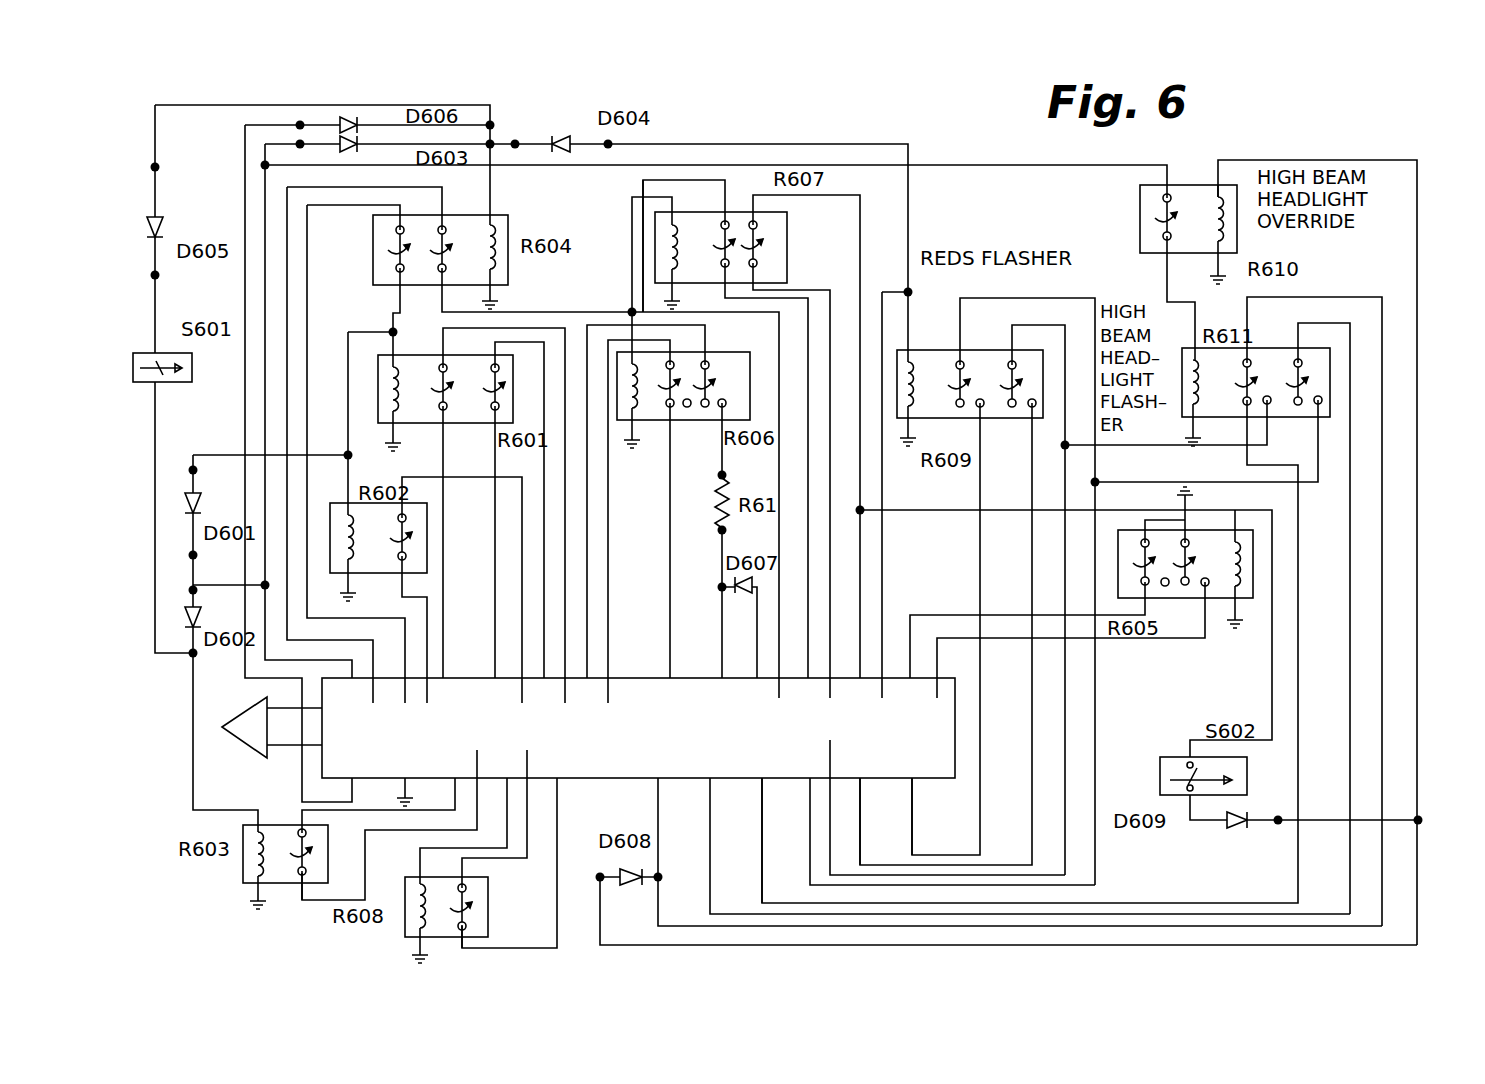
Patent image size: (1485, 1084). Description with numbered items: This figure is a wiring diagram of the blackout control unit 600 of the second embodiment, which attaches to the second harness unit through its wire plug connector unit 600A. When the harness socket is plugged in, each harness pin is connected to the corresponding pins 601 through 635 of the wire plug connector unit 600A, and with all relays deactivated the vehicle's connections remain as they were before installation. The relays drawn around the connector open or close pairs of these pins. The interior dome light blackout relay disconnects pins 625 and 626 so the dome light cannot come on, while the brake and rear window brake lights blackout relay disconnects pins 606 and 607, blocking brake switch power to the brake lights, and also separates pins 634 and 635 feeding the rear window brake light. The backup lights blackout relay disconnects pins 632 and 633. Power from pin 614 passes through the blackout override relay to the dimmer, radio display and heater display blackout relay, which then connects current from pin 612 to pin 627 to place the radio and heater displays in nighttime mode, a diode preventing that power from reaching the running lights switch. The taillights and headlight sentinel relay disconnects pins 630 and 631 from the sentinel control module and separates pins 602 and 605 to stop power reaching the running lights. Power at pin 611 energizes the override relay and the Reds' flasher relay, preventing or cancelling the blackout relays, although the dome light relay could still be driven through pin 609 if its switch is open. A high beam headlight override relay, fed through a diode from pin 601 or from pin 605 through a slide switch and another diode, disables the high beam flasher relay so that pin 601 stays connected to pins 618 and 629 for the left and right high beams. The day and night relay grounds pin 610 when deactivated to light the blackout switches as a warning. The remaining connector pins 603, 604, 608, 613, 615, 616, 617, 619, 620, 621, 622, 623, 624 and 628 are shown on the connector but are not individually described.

The blackout control unit 600 is at (1385, 143).
The wire plug connector unit 600A is at (323, 752).
The pin 601 is at (664, 763).
The pin 602 is at (824, 716).
The pin 603 is at (809, 763).
The pin 604 is at (829, 738).
The pin 605 is at (859, 694).
The pin 606 is at (499, 694).
The pin 607 is at (544, 694).
The pin 608 is at (932, 716).
The pin 609 is at (352, 694).
The pin 610 is at (916, 694).
The pin 611 is at (884, 716).
The pin 612 is at (589, 694).
The pin 613 is at (404, 694).
The pin 614 is at (372, 716).
The pin 615 is at (352, 763).
The pin 616 is at (507, 763).
The pin 617 is at (404, 763).
The pin 618 is at (764, 763).
The pin 619 is at (864, 763).
The pin 620 is at (912, 763).
The pin 621 is at (529, 738).
The pin 622 is at (561, 763).
The pin 623 is at (612, 716).
The pin 624 is at (659, 694).
The pin 625 is at (456, 763).
The pin 626 is at (476, 738).
The pin 627 is at (709, 694).
The pin 628 is at (759, 694).
The pin 629 is at (716, 763).
The pin 630 is at (776, 716).
The pin 631 is at (809, 694).
The pin 632 is at (426, 716).
The pin 633 is at (516, 716).
The pin 634 is at (456, 694).
The pin 635 is at (564, 716).